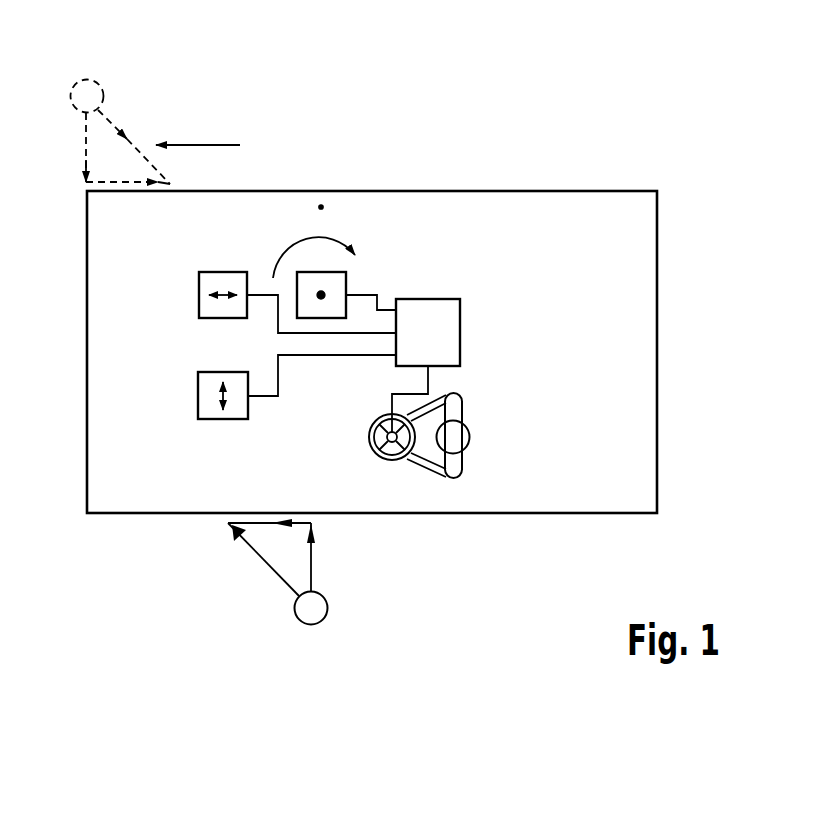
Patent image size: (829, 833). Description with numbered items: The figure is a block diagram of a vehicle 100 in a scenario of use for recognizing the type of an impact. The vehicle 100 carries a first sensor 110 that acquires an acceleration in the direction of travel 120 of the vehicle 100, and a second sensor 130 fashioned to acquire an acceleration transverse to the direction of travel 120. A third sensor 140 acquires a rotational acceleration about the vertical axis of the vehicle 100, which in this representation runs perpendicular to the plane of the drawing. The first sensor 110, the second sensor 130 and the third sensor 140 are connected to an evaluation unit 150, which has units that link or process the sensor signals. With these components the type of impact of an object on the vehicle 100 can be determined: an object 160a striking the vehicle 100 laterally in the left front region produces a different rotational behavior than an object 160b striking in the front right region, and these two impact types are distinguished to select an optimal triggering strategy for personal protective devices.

The vehicle 100 is at (448, 190).
The first sensor 110 is at (199, 295).
The direction of travel 120 is at (223, 143).
The second sensor 130 is at (198, 396).
The third sensor 140 is at (310, 271).
The evaluation unit 150 is at (428, 298).
The object 160a is at (328, 608).
The object 160b is at (100, 93).